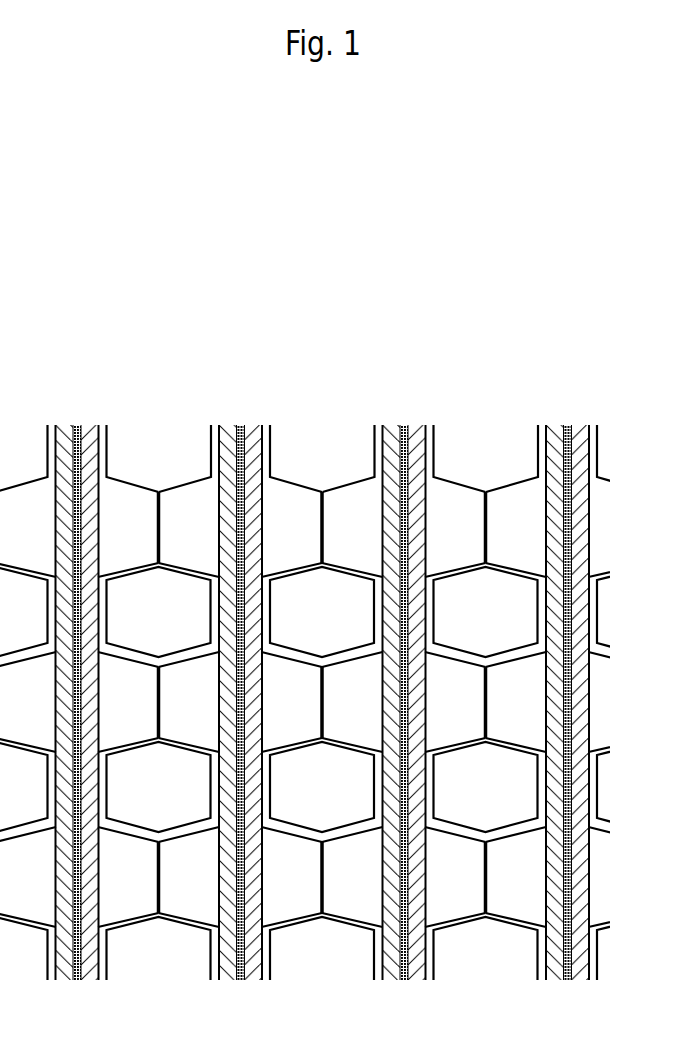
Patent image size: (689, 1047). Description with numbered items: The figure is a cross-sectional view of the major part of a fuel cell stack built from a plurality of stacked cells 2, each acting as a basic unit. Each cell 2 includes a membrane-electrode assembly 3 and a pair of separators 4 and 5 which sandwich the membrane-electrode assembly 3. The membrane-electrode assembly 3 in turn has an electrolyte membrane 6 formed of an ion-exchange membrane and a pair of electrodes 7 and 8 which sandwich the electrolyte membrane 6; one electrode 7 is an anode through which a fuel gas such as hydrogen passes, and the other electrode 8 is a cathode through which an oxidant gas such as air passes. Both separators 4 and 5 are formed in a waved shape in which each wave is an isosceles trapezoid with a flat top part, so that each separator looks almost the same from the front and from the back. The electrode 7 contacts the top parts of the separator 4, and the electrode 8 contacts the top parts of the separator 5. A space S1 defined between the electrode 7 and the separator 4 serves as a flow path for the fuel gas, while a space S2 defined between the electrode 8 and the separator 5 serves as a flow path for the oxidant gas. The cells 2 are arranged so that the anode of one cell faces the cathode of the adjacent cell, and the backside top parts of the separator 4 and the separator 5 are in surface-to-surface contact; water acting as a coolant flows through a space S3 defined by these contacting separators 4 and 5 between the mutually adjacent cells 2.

The cell 2 is at (324, 612).
The membrane-electrode assembly 3 is at (322, 631).
The separator 4 is at (41, 476).
The separator 5 is at (132, 471).
The electrolyte membrane 6 is at (77, 425).
The electrode 7 is at (66, 425).
The electrode 8 is at (88, 425).
The space S1 is at (179, 539).
The space S2 is at (110, 539).
The space S3 is at (145, 630).